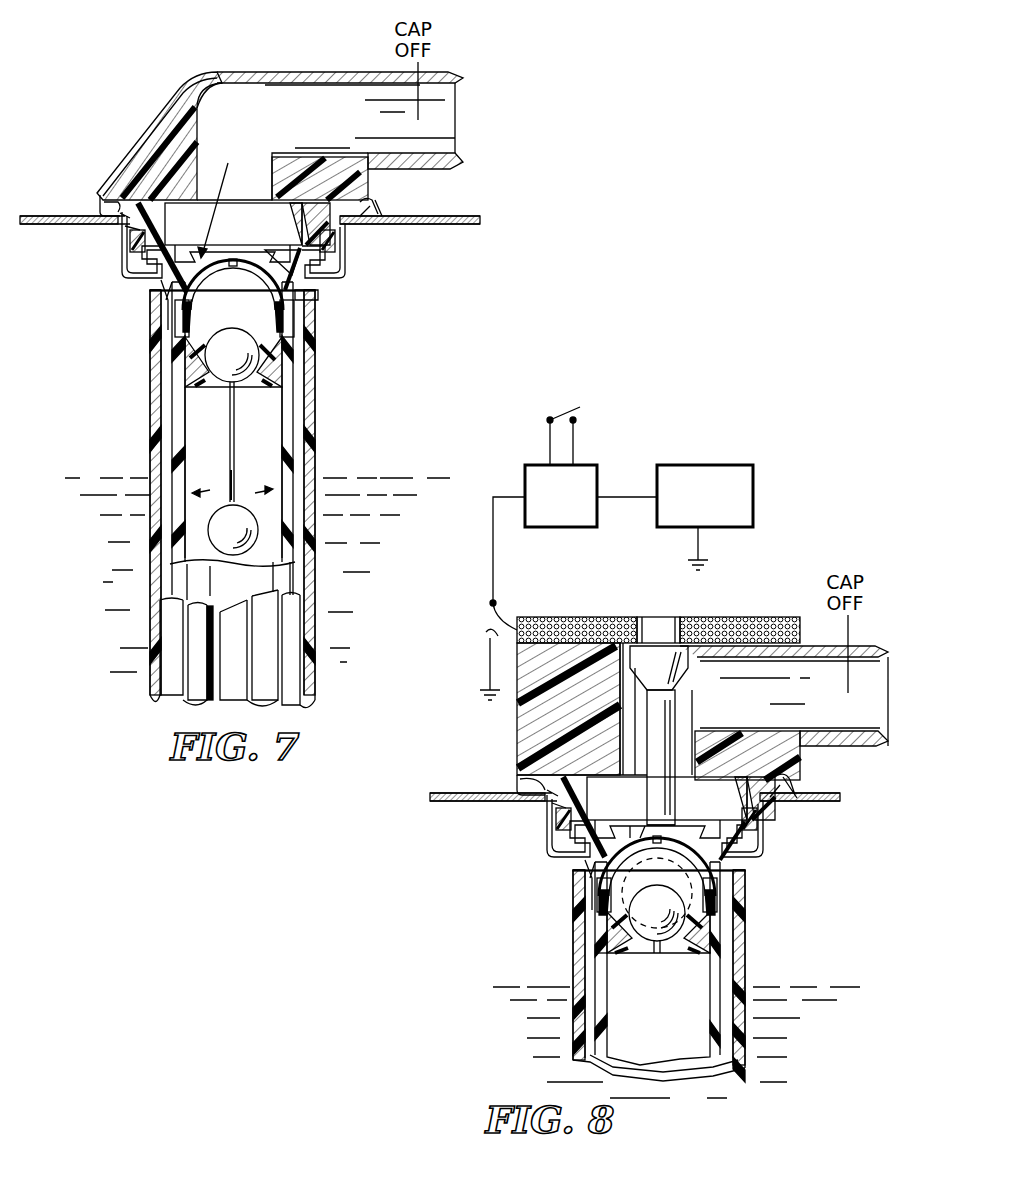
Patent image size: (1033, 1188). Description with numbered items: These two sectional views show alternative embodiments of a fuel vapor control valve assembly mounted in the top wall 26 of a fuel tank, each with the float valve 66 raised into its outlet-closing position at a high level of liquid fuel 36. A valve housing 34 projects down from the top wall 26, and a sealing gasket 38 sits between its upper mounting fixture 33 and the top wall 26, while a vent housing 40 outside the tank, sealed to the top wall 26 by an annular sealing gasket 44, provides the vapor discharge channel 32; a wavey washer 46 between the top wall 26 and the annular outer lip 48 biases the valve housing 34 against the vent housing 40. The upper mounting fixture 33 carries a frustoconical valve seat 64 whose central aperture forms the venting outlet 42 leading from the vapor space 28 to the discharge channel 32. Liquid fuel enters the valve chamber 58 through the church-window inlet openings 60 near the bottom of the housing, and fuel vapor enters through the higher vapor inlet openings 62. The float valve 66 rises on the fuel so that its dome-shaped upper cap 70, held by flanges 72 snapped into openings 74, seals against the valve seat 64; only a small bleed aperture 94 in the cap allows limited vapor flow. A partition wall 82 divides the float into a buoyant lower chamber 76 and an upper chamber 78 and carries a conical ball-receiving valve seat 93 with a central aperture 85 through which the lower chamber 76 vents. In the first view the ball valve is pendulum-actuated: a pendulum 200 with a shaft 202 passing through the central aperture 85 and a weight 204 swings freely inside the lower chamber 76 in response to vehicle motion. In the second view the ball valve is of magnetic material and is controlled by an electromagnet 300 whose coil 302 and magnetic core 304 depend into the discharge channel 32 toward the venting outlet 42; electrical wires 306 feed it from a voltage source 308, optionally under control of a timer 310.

In FIG. 7, the top wall 26 is at (430, 222).
In FIG. 8, the top wall 26 is at (832, 800).
In FIG. 7, the vapor space 28 is at (380, 329).
In FIG. 8, the vapor space 28 is at (821, 882).
In FIG. 7, the vapor discharge channel 32 is at (347, 119).
In FIG. 8, the vapor discharge channel 32 is at (836, 702).
In FIG. 7, the upper mounting fixture 33 is at (305, 228).
In FIG. 8, the upper mounting fixture 33 is at (752, 800).
In FIG. 7, the valve housing 34 is at (150, 416).
In FIG. 8, the valve housing 34 is at (573, 969).
In FIG. 7, the liquid fuel 36 is at (384, 599).
In FIG. 8, the liquid fuel 36 is at (806, 1055).
In FIG. 7, the sealing gasket 38 is at (345, 252).
In FIG. 8, the sealing gasket 38 is at (762, 828).
In FIG. 7, the vent housing 40 is at (155, 140).
In FIG. 8, the vent housing 40 is at (527, 740).
In FIG. 8, the venting outlet 42 is at (631, 830).
In FIG. 7, the annular sealing gasket 44 is at (380, 217).
In FIG. 8, the annular sealing gasket 44 is at (800, 800).
In FIG. 7, the wavey washer 46 is at (118, 222).
In FIG. 8, the wavey washer 46 is at (545, 795).
In FIG. 7, the annular outer lip 48 is at (100, 213).
In FIG. 8, the annular outer lip 48 is at (545, 748).
In FIG. 7, the valve chamber 58 is at (168, 333).
In FIG. 8, the valve chamber 58 is at (590, 882).
In FIG. 7, the inlet openings 60 is at (300, 566).
In FIG. 7, the vapor inlet openings 62 is at (160, 312).
In FIG. 8, the vapor inlet openings 62 is at (745, 895).
In FIG. 7, the frustoconical valve seat 64 is at (192, 258).
In FIG. 8, the frustoconical valve seat 64 is at (688, 828).
In FIG. 8, the float valve 66 is at (601, 990).
In FIG. 7, the dome-shaped upper cap 70 is at (318, 300).
In FIG. 7, the flanges 72 is at (290, 338).
In FIG. 8, the flanges 72 is at (715, 912).
In FIG. 7, the openings 74 is at (300, 345).
In FIG. 8, the openings 74 is at (605, 915).
In FIG. 7, the lower chamber 76 is at (192, 432).
In FIG. 8, the lower chamber 76 is at (700, 980).
In FIG. 7, the upper chamber 78 is at (194, 317).
In FIG. 7, the partition wall 82 is at (300, 372).
In FIG. 8, the partition wall 82 is at (700, 945).
In FIG. 7, the central aperture 85 is at (235, 392).
In FIG. 8, the central aperture 85 is at (661, 946).
In FIG. 7, the conical ball-receiving valve seat 93 is at (255, 348).
In FIG. 8, the conical ball-receiving valve seat 93 is at (720, 930).
In FIG. 7, the bleed aperture 94 is at (233, 270).
In FIG. 8, the bleed aperture 94 is at (660, 840).
In FIG. 7, the pendulum 200 is at (258, 464).
In FIG. 7, the shaft 202 is at (232, 488).
In FIG. 7, the weight 204 is at (252, 545).
In FIG. 8, the electromagnet 300 is at (640, 610).
In FIG. 8, the coil 302 is at (600, 617).
In FIG. 8, the magnetic core 304 is at (668, 727).
In FIG. 8, the electrical wires 306 is at (496, 496).
In FIG. 8, the voltage source 308 is at (712, 470).
In FIG. 8, the timer 310 is at (585, 470).